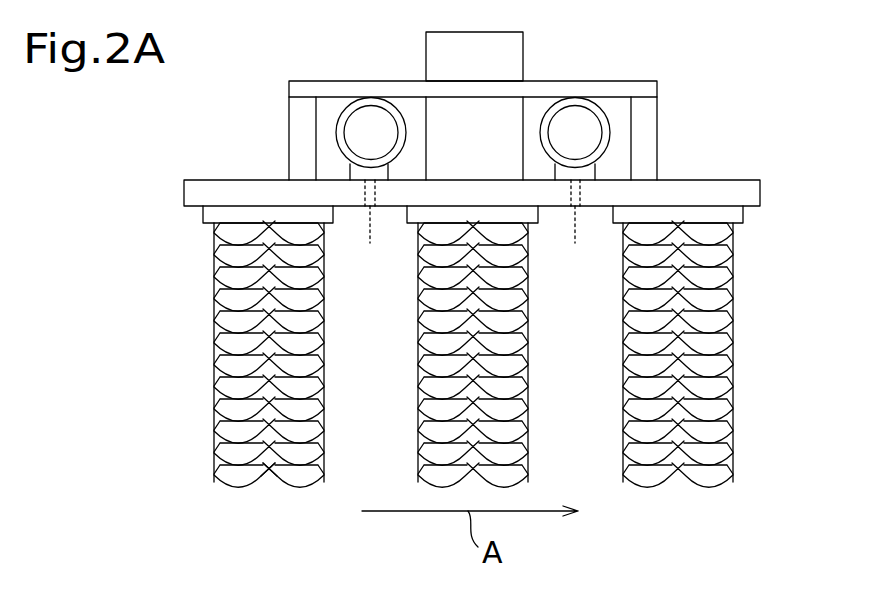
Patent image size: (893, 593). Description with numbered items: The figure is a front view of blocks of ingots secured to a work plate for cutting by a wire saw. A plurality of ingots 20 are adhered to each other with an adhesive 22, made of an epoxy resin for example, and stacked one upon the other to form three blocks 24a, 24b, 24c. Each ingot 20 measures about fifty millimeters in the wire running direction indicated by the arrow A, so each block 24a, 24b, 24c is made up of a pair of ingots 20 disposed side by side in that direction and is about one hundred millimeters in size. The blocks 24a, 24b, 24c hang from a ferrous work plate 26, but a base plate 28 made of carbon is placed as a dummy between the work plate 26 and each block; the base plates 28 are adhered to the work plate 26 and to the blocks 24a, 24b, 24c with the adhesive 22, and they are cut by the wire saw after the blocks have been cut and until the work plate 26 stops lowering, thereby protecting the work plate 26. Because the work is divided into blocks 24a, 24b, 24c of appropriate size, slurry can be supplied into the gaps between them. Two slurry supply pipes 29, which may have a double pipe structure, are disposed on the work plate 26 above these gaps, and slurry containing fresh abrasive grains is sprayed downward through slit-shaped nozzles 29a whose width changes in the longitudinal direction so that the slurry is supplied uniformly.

The ingot 20 is at (227, 476).
The adhesive 22 is at (213, 441).
The block 24a is at (337, 444).
The block 24b is at (544, 421).
The block 24c is at (751, 419).
The work plate 26 is at (761, 191).
The base plate 28 is at (743, 215).
The slurry supply pipe 29 is at (402, 113).
The slit-shaped nozzle 29a is at (473, 235).